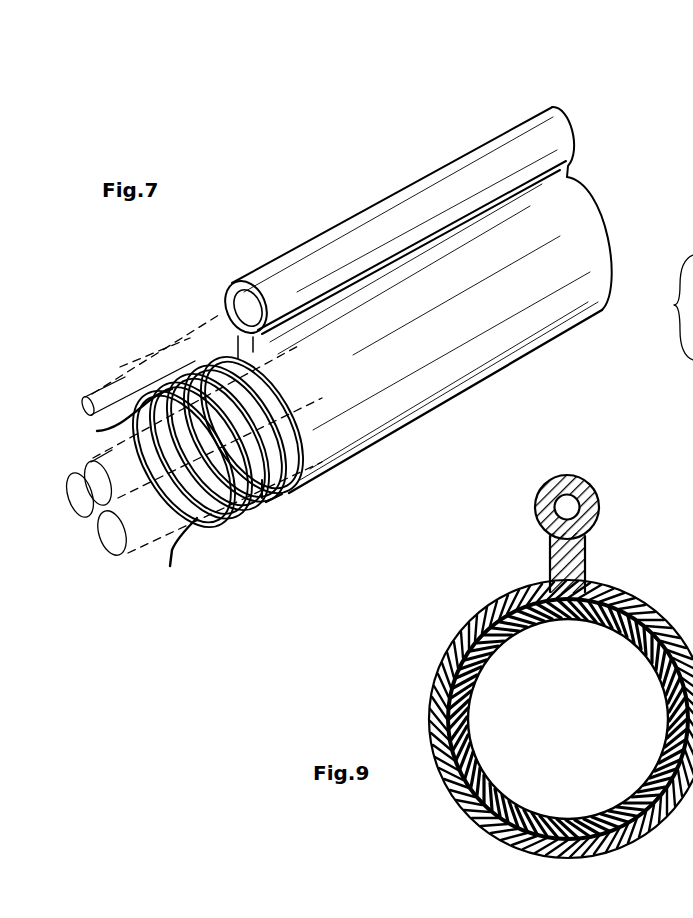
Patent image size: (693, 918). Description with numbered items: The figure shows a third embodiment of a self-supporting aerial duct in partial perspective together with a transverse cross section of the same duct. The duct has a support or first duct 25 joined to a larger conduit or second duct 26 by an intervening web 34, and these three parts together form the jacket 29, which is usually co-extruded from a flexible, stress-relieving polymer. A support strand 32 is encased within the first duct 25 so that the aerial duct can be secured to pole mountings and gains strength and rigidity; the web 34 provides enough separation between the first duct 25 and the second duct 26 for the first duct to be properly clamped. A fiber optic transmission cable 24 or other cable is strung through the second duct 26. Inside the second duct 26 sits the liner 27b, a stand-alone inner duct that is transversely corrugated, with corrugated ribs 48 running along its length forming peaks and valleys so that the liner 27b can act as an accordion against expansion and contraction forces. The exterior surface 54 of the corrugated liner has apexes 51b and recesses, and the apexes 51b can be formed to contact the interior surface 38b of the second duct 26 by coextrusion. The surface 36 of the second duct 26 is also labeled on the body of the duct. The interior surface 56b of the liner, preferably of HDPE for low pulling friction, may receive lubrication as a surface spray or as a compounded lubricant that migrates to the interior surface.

In FIG. 7, the fiber optic transmission cable 24 is at (103, 522).
In FIG. 7, the first duct 25 is at (569, 111).
In FIG. 9, the first duct 25 is at (597, 491).
In FIG. 7, the second duct 26 is at (601, 211).
In FIG. 7, the liner 27b is at (248, 514).
In FIG. 9, the liner 27b is at (663, 707).
In FIG. 7, the jacket 29 is at (489, 386).
In FIG. 7, the support strand 32 is at (137, 346).
In FIG. 9, the web 34 is at (586, 548).
In FIG. 7, the tube surface 36 is at (350, 430).
In FIG. 7, the interior surface 38b is at (270, 502).
In FIG. 7, the corrugated ribs 48 is at (177, 557).
In FIG. 7, the apexes 51b is at (676, 214).
In FIG. 7, the exterior surface 54 is at (262, 486).
In FIG. 7, the interior surface 56b is at (114, 415).